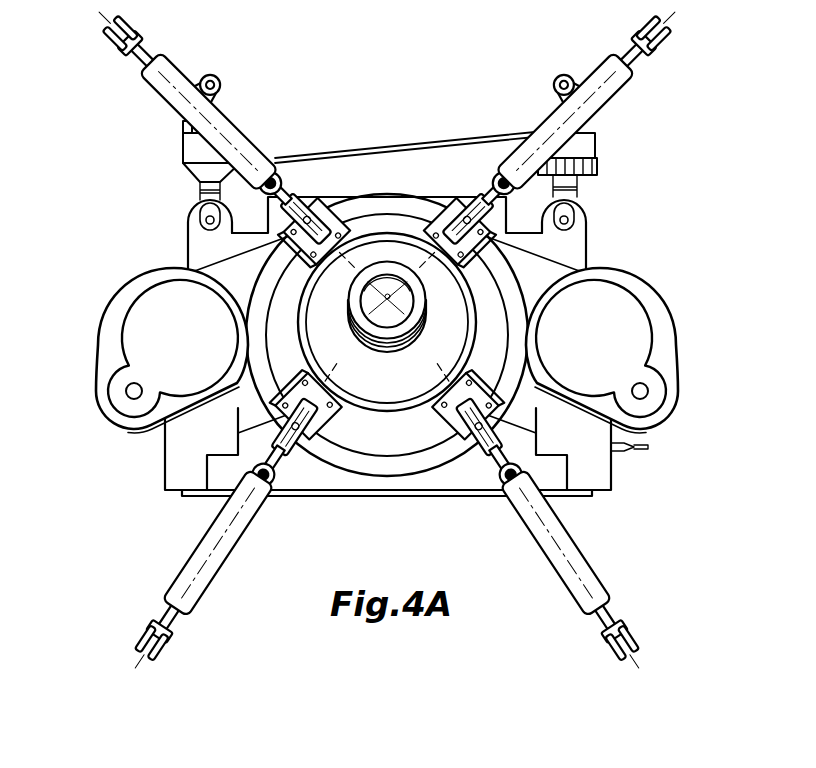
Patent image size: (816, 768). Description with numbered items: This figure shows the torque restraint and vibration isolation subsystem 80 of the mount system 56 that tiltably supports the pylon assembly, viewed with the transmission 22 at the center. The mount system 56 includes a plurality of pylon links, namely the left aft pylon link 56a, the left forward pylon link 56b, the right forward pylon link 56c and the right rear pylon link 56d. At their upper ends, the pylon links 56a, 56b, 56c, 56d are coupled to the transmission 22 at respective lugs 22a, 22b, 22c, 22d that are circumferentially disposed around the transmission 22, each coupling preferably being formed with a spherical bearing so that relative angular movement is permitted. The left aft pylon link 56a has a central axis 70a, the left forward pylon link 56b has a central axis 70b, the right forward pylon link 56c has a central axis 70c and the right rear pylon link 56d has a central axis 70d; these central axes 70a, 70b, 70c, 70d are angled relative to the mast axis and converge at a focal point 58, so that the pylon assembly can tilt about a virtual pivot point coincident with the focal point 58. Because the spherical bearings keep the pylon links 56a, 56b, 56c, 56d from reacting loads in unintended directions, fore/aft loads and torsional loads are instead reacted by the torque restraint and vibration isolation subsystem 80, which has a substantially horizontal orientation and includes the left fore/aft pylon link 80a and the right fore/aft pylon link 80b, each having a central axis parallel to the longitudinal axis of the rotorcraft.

The transmission 22 is at (510, 283).
The lug 22a is at (322, 465).
The lug 22b is at (325, 205).
The lug 22c is at (448, 228).
The lug 22d is at (453, 465).
The mount system 56 is at (392, 338).
The left aft pylon link 56a is at (187, 563).
The left forward pylon link 56b is at (156, 98).
The right forward pylon link 56c is at (618, 98).
The right rear pylon link 56d is at (593, 563).
The focal point 58 is at (387, 294).
The central axis 70a is at (218, 545).
The central axis 70b is at (220, 126).
The central axis 70c is at (558, 127).
The central axis 70d is at (557, 547).
The torque restraint and vibration isolation subsystem 80 is at (393, 166).
The left fore/aft pylon link 80a is at (183, 150).
The right fore/aft pylon link 80b is at (595, 152).